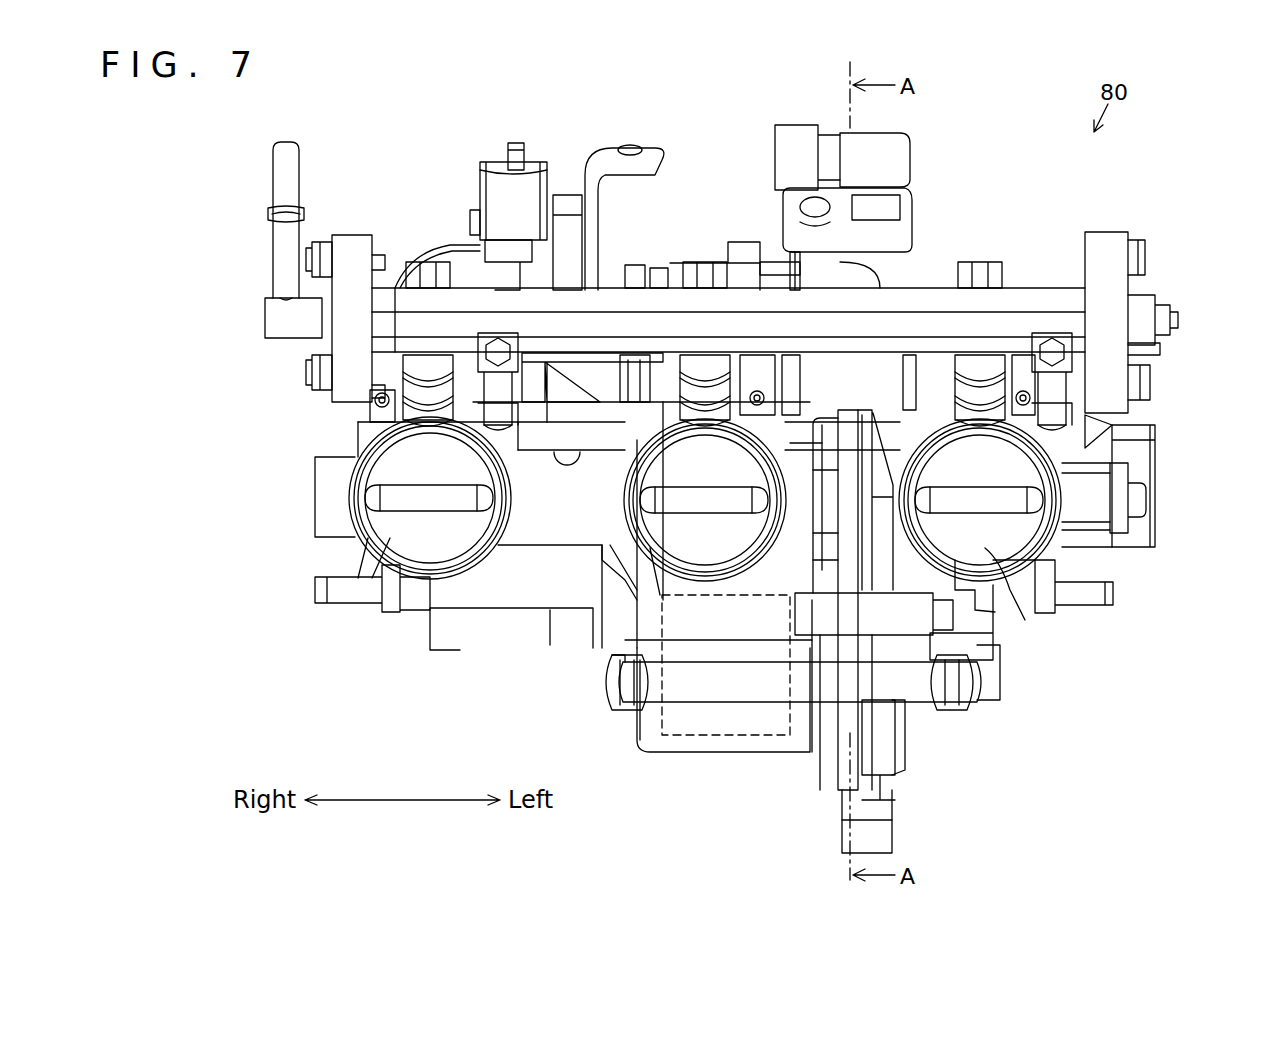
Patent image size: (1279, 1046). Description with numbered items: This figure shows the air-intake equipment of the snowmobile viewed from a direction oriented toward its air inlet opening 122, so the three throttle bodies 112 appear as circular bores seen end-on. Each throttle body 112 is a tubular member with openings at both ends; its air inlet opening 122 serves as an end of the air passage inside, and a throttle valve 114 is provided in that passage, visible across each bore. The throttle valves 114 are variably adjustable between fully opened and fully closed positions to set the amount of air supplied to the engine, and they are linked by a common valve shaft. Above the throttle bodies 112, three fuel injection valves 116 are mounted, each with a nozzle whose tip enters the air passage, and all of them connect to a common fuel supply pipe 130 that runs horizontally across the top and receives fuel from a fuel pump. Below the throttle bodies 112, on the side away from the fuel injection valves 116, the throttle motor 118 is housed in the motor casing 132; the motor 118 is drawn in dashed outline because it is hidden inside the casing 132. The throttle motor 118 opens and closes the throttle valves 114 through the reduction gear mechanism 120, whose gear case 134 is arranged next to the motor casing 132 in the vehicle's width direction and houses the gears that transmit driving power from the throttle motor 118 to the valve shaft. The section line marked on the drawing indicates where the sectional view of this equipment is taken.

The throttle body 112 is at (452, 598).
The throttle valve 114 is at (397, 455).
The fuel injection valve 116 is at (400, 405).
The throttle motor 118 is at (770, 735).
The reduction gear mechanism 120 is at (918, 573).
The air inlet opening 122 is at (388, 545).
The fuel supply pipe 130 is at (350, 235).
The motor casing 132 is at (682, 745).
The gear case 134 is at (858, 745).